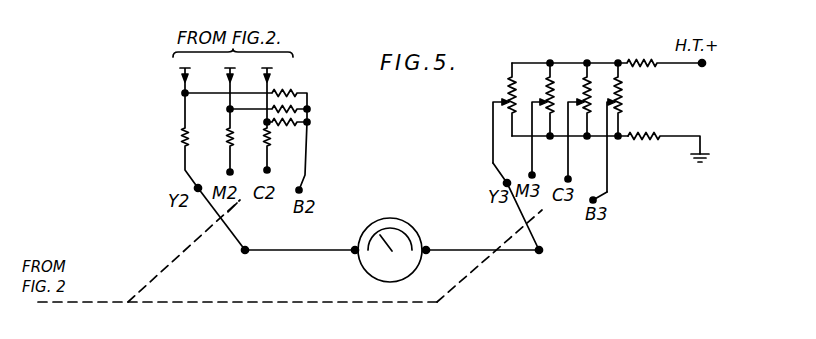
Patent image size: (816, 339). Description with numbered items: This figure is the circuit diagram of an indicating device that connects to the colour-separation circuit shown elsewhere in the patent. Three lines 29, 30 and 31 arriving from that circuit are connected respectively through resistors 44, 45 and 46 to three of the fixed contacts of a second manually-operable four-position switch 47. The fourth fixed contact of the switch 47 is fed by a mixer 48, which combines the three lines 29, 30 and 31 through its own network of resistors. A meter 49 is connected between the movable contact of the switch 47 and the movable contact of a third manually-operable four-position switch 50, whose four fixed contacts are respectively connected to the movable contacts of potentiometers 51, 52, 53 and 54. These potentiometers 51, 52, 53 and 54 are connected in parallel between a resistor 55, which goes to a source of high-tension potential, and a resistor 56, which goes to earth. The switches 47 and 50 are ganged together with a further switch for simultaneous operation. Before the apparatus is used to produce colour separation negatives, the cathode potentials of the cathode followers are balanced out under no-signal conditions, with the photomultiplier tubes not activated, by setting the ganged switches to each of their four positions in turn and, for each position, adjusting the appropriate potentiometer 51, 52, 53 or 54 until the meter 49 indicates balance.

The line 29 is at (181, 90).
The line 30 is at (227, 90).
The line 31 is at (270, 84).
The resistor 44 is at (181, 137).
The resistor 45 is at (226, 137).
The resistor 46 is at (271, 136).
The second manually-operable four-position switch 47 is at (236, 239).
The mixer 48 is at (316, 109).
The meter 49 is at (415, 265).
The third manually-operable four-position switch 50 is at (565, 202).
The potentiometer 51 is at (508, 93).
The potentiometer 52 is at (538, 119).
The potentiometer 53 is at (575, 121).
The potentiometer 54 is at (622, 90).
The resistor 55 is at (642, 53).
The resistor 56 is at (652, 140).